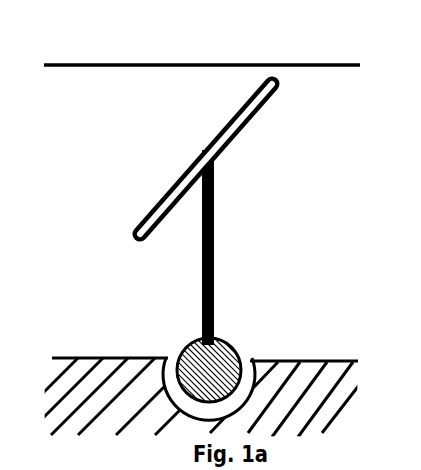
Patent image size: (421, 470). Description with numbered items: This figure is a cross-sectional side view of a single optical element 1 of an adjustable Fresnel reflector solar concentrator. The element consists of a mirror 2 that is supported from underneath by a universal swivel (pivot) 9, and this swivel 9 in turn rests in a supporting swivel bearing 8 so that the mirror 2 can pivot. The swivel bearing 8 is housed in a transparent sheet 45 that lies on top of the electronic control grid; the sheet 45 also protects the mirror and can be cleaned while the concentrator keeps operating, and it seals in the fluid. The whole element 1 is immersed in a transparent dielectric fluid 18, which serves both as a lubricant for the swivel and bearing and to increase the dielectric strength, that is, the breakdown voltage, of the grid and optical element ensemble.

The transparent sheet 45 is at (134, 67).
The mirror 2 is at (201, 153).
The optical element 1 is at (100, 235).
The transparent dielectric fluid 18 is at (247, 216).
The universal swivel 9 is at (236, 352).
The swivel bearing 8 is at (254, 372).